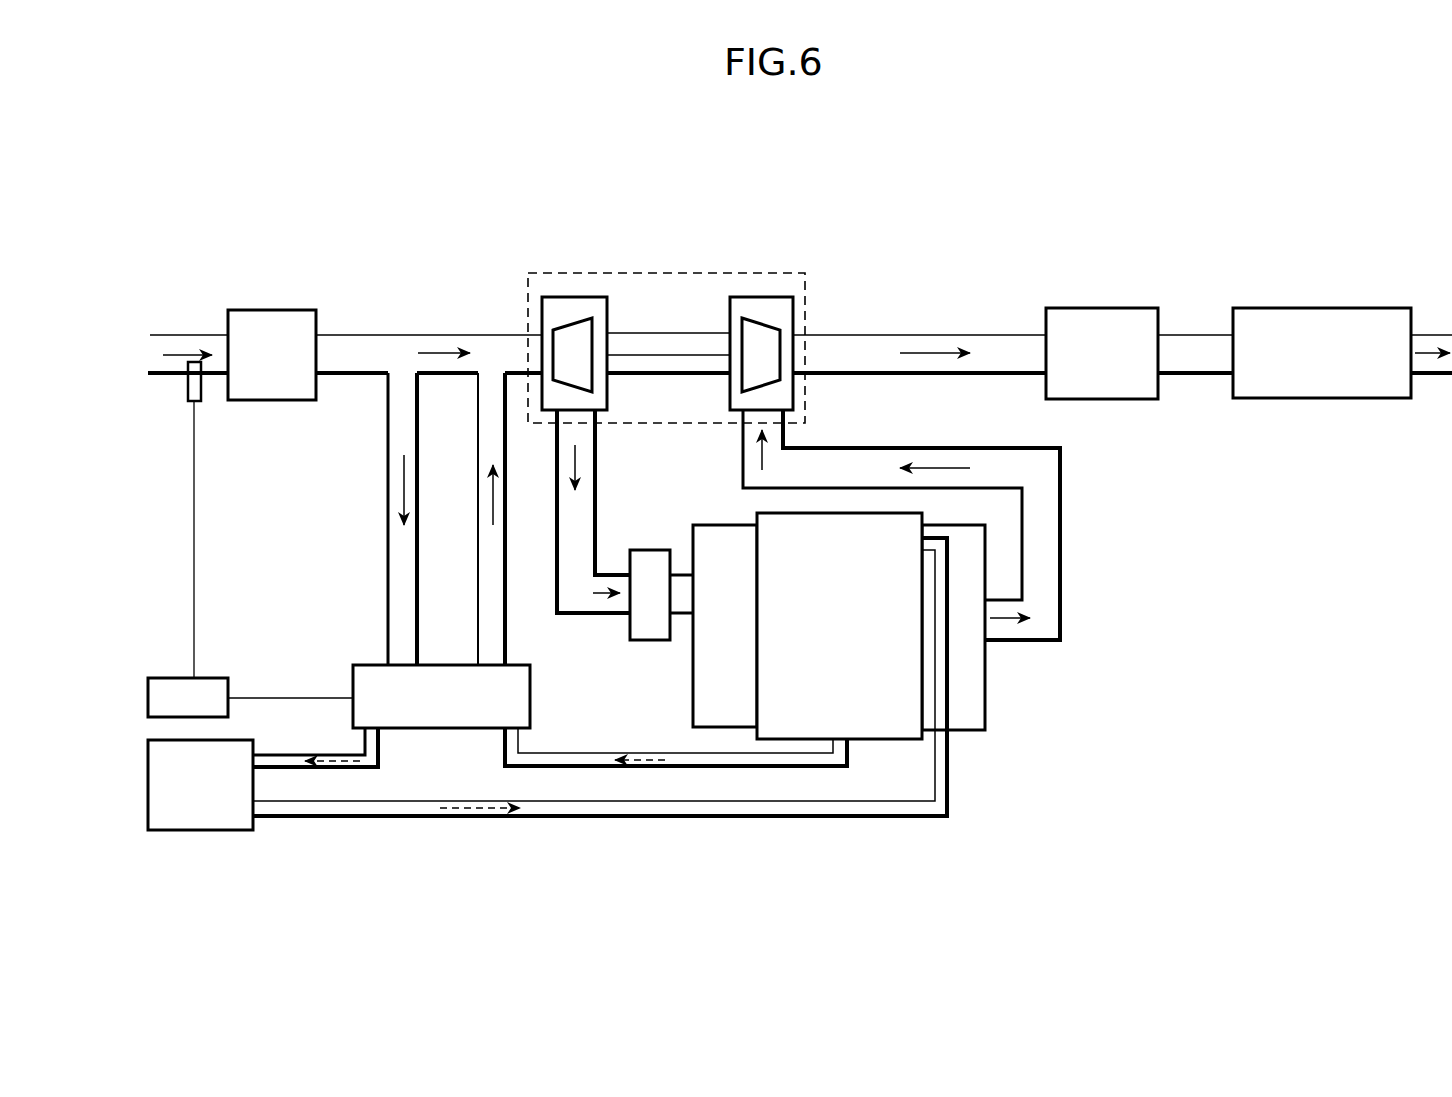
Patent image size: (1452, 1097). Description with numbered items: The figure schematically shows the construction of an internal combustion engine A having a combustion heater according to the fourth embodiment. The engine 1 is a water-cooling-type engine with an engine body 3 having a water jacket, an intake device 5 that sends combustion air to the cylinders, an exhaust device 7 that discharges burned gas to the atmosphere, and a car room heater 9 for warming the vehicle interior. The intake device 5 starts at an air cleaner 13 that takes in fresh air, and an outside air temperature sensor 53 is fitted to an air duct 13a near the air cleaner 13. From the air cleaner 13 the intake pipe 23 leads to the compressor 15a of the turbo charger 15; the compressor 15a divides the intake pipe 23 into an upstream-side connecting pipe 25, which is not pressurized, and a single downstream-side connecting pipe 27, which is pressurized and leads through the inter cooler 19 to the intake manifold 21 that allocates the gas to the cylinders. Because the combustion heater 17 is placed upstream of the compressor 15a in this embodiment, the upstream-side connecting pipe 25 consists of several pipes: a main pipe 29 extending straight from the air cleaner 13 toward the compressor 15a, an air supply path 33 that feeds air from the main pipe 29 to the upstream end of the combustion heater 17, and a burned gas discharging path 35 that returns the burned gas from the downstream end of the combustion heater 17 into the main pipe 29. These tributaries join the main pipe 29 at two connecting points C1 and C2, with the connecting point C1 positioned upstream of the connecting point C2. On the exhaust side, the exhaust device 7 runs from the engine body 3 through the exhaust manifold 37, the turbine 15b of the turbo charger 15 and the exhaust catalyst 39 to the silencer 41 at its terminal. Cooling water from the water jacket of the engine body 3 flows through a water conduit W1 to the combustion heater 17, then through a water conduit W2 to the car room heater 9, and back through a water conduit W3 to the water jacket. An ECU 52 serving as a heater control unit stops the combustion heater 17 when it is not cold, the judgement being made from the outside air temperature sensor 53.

The engine 1 is at (917, 740).
The engine body 3 is at (878, 739).
The intake device 5 is at (306, 290).
The exhaust device 7 is at (1020, 300).
The car room heater 9 is at (196, 830).
The air cleaner 13 is at (262, 310).
The air duct 13a is at (165, 335).
The turbo charger 15 is at (666, 297).
The compressor 15a is at (575, 297).
The turbine 15b is at (760, 297).
The combustion heater 17 is at (353, 676).
The inter cooler 19 is at (648, 550).
The intake manifold 21 is at (700, 650).
The intake pipe 23 is at (390, 333).
The upstream-side connecting pipe 25 is at (404, 519).
The downstream-side connecting pipe 27 is at (596, 437).
The main pipe 29 is at (372, 385).
The air supply path 33 is at (397, 432).
The burned gas discharging path 35 is at (478, 437).
The exhaust manifold 37 is at (985, 700).
The exhaust catalyst 39 is at (1105, 308).
The silencer 41 is at (1326, 308).
The ECU 52 is at (160, 678).
The outside air temperature sensor 53 is at (188, 390).
The internal combustion engine having the combustion heater A is at (873, 250).
The connecting point C1 is at (400, 355).
The connecting point C2 is at (488, 355).
The water conduit W1 is at (813, 767).
The water conduit W2 is at (343, 770).
The water conduit W3 is at (293, 818).